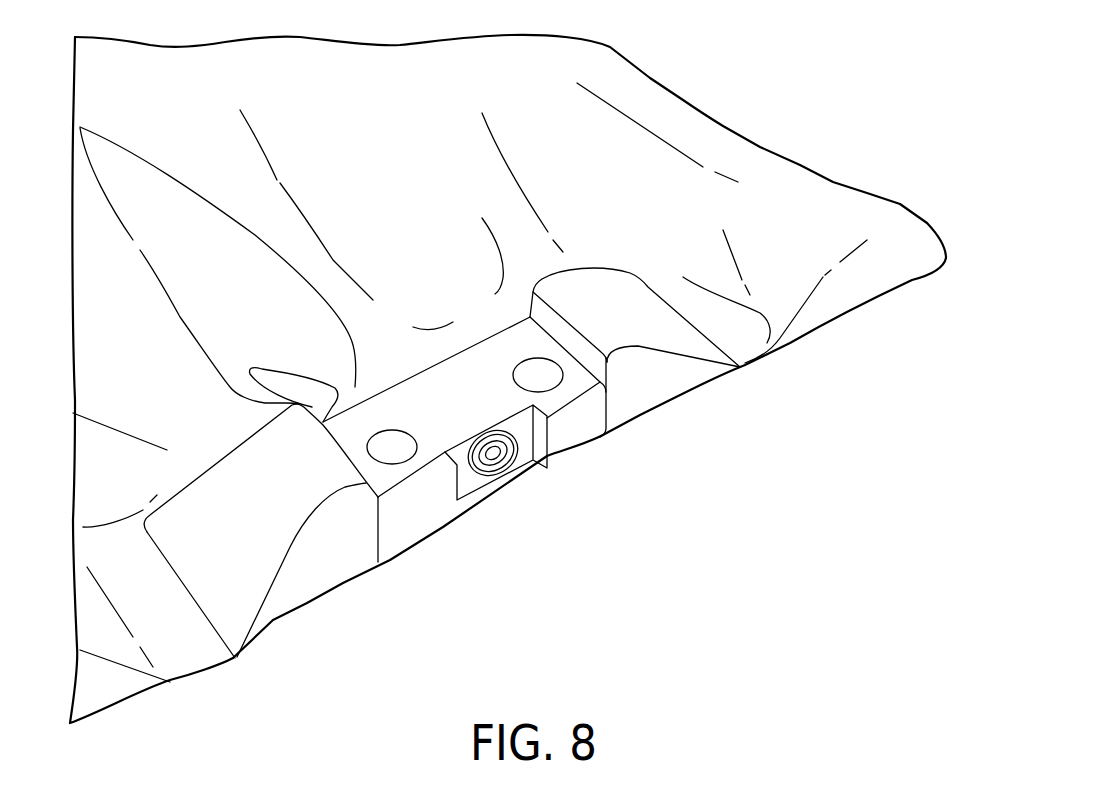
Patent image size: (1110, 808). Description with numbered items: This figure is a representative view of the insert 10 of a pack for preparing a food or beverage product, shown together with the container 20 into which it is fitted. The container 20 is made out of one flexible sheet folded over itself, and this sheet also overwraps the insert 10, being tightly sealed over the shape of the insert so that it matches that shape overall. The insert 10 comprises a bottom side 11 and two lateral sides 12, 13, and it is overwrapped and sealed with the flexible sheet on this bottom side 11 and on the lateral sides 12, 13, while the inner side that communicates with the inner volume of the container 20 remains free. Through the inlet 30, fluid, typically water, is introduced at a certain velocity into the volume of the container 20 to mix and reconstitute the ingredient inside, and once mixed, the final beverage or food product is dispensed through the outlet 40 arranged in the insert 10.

The insert 10 is at (672, 370).
The bottom side 11 is at (357, 547).
The lateral side 12 is at (237, 590).
The lateral side 13 is at (310, 603).
The container 20 is at (713, 139).
The inlet 30 is at (392, 447).
The outlet 40 is at (493, 455).